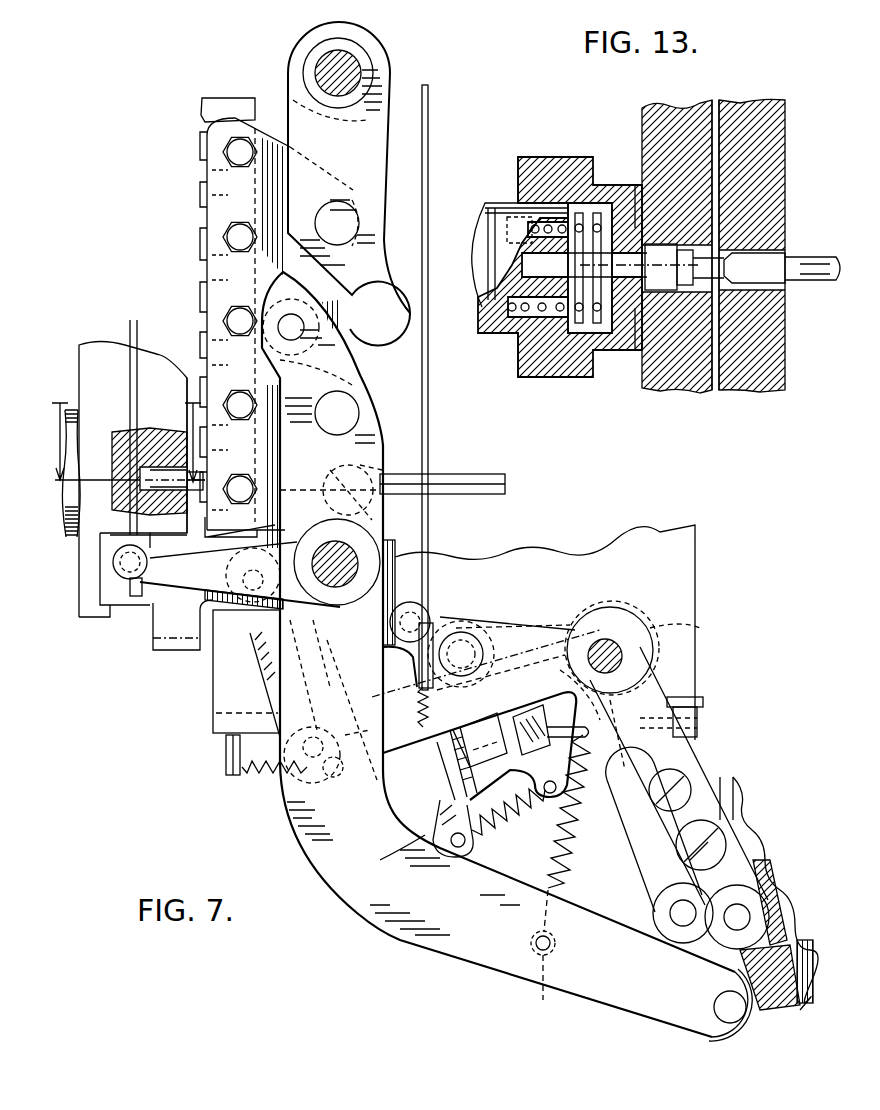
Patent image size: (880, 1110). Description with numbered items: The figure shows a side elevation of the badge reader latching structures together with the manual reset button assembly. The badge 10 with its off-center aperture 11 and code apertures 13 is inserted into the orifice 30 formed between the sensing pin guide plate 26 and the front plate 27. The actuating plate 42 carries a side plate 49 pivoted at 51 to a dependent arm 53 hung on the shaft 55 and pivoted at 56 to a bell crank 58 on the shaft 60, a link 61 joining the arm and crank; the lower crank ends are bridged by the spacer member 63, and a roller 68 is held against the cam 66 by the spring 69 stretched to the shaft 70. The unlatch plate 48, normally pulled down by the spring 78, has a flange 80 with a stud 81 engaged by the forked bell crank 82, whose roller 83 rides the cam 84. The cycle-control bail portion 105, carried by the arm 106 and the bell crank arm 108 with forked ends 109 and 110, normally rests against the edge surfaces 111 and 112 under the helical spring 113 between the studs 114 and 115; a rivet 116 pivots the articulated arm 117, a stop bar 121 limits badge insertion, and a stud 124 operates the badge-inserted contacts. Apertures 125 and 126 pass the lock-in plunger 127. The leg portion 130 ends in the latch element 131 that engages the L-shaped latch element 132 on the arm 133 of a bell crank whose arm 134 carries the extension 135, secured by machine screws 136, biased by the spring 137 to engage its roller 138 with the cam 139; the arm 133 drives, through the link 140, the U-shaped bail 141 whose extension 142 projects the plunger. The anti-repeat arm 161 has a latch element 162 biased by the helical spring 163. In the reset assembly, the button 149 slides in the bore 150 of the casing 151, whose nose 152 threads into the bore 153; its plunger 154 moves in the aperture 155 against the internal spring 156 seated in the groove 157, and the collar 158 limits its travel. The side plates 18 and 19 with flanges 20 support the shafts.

In FIG. 7, the badge 10 is at (137, 336).
In FIG. 7, the off-center aperture 11 is at (150, 440).
In FIG. 7, the rectangular apertures 13 is at (80, 386).
In FIG. 7, the side plate 18 is at (695, 560).
In FIG. 7, the side plate 19 is at (222, 670).
In FIG. 7, the bottom flange 20 is at (225, 705).
In FIG. 7, the sensing pin guide plate 26 is at (170, 366).
In FIG. 13, the sensing pin guide plate 26 is at (780, 128).
In FIG. 7, the front plate 27 is at (93, 346).
In FIG. 13, the front plate 27 is at (672, 120).
In FIG. 7, the rectangular orifice 30 is at (140, 490).
In FIG. 13, the rectangular orifice 30 is at (718, 125).
In FIG. 7, the actuating plate 42 is at (215, 105).
In FIG. 7, the unlatch plate 48 is at (428, 378).
In FIG. 7, the side plate 49 is at (268, 135).
In FIG. 7, the pivot 51 is at (348, 222).
In FIG. 7, the dependent arm 53 is at (372, 133).
In FIG. 7, the shaft 55 is at (345, 70).
In FIG. 7, the pivot 56 is at (345, 412).
In FIG. 7, the bell crank 58 is at (410, 935).
In FIG. 7, the shaft 60 is at (348, 552).
In FIG. 7, the link 61 is at (350, 345).
In FIG. 7, the bridging spacer member 63 is at (545, 975).
In FIG. 7, the cam 66 is at (790, 998).
In FIG. 7, the cam follower roller 68 is at (745, 1040).
In FIG. 7, the spring 69 is at (570, 860).
In FIG. 7, the shaft 70 is at (612, 645).
In FIG. 7, the spring 78 is at (410, 700).
In FIG. 7, the upstanding flange 80 is at (420, 610).
In FIG. 7, the stud 81 is at (466, 645).
In FIG. 7, the forked bell crank 82 is at (515, 628).
In FIG. 7, the cam follower roller 83 is at (718, 945).
In FIG. 7, the cam 84 is at (775, 880).
In FIG. 7, the bail portion 105 is at (140, 565).
In FIG. 7, the arm 106 is at (200, 590).
In FIG. 7, the bell crank arm 108 is at (390, 580).
In FIG. 7, the forked end portion 109 is at (500, 758).
In FIG. 7, the forked end portion 110 is at (288, 822).
In FIG. 7, the lower edge surface 111 is at (195, 590).
In FIG. 7, the lower edge surface 112 is at (112, 535).
In FIG. 7, the helical spring 113 is at (255, 775).
In FIG. 7, the stud 114 is at (226, 750).
In FIG. 7, the stud 115 is at (340, 780).
In FIG. 7, the rivet 116 is at (432, 620).
In FIG. 7, the articulated arm 117 is at (535, 712).
In FIG. 7, the stop bar 121 is at (95, 620).
In FIG. 7, the stud 124 is at (133, 598).
In FIG. 7, the aperture 125 is at (172, 430).
In FIG. 13, the aperture 125 is at (765, 250).
In FIG. 13, the aperture 126 is at (712, 240).
In FIG. 7, the lock-in plunger 127 is at (450, 476).
In FIG. 13, the lock-in plunger 127 is at (808, 257).
In FIG. 7, the projecting leg portion 130 is at (485, 815).
In FIG. 7, the latch element 131 is at (440, 794).
In FIG. 7, the L-shaped latch element 132 is at (440, 720).
In FIG. 7, the arm 133 is at (372, 680).
In FIG. 7, the arm 134 is at (703, 720).
In FIG. 7, the arm extension 135 is at (650, 868).
In FIG. 7, the machine screws 136 is at (640, 820).
In FIG. 7, the helical spring 137 is at (700, 630).
In FIG. 7, the cam-follower roller 138 is at (652, 912).
In FIG. 7, the cam 139 is at (740, 795).
In FIG. 7, the link 140 is at (255, 632).
In FIG. 7, the U-shaped bail 141 is at (160, 648).
In FIG. 7, the extension 142 is at (378, 455).
In FIG. 13, the reset button 149 is at (493, 203).
In FIG. 13, the bore 150 is at (535, 157).
In FIG. 7, the casing 151 is at (76, 410).
In FIG. 13, the casing 151 is at (575, 157).
In FIG. 13, the nose 152 is at (672, 395).
In FIG. 13, the threaded bore 153 is at (645, 185).
In FIG. 13, the plunger 154 is at (588, 340).
In FIG. 13, the concentric aperture 155 is at (622, 290).
In FIG. 13, the internal helical spring 156 is at (558, 318).
In FIG. 13, the annular groove 157 is at (514, 318).
In FIG. 13, the collar 158 is at (655, 292).
In FIG. 7, the arm 161 is at (380, 860).
In FIG. 7, the latch element 162 is at (448, 768).
In FIG. 7, the helical spring 163 is at (480, 840).